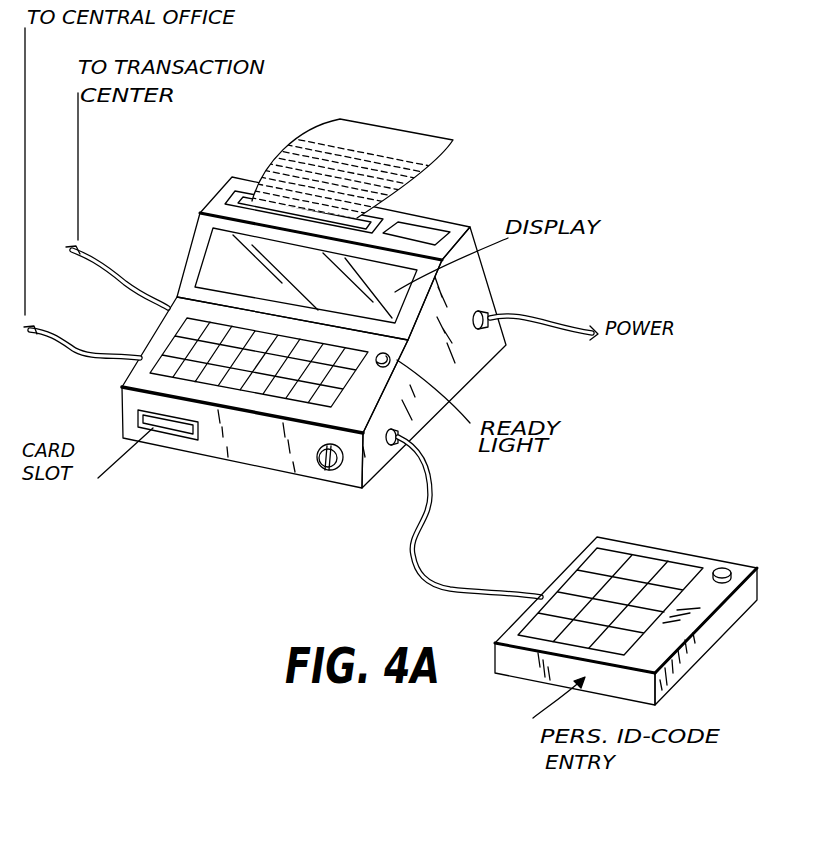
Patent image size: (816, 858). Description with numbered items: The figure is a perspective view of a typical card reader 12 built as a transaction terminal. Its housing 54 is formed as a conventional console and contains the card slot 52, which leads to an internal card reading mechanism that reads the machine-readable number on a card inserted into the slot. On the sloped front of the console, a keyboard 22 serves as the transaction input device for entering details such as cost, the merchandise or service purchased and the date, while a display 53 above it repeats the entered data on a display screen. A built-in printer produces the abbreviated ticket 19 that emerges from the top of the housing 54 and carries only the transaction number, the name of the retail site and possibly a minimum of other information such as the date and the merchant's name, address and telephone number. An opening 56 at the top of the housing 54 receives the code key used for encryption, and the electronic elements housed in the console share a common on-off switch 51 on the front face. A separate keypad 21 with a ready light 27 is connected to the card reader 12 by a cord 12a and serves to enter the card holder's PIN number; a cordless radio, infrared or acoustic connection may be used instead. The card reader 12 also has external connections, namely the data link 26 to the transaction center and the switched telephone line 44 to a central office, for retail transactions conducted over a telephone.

The card reader 12 is at (478, 231).
The cord 12a is at (420, 567).
The abbreviated ticket 19 is at (380, 143).
The keypad 21 is at (538, 627).
The keyboard 22 is at (282, 388).
The data link 26 is at (128, 288).
The ready light 27 is at (722, 567).
The switched telephone line 44 is at (63, 352).
The on-off switch 51 is at (337, 472).
The card slot 52 is at (174, 430).
The display 53 is at (218, 270).
The housing 54 is at (485, 288).
The opening 56 is at (413, 237).